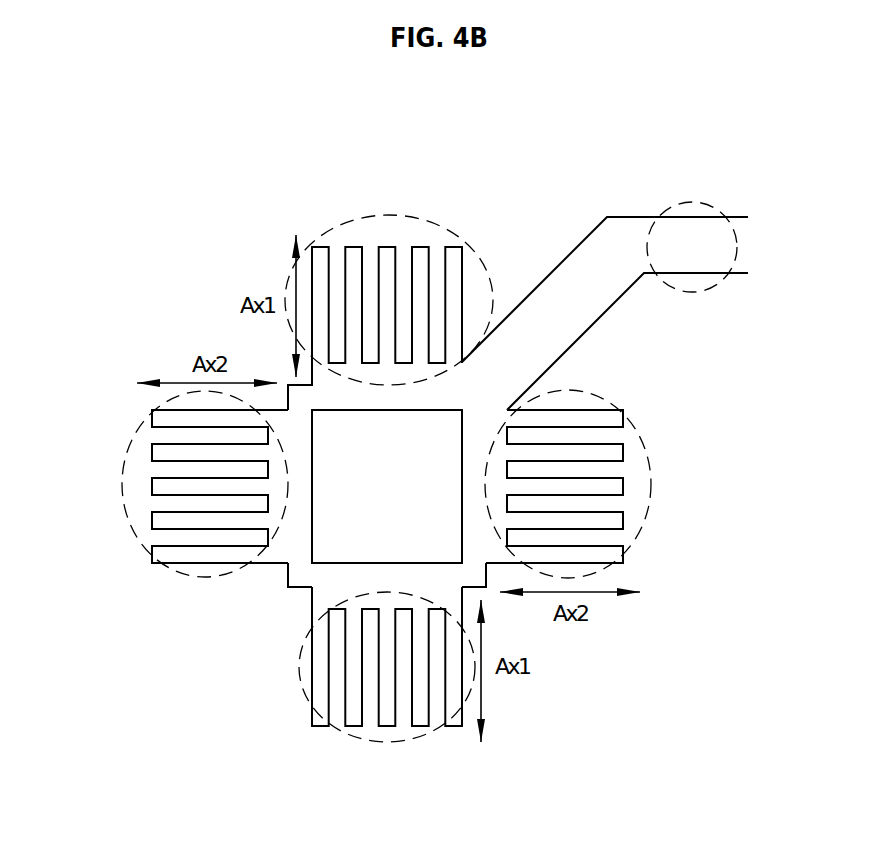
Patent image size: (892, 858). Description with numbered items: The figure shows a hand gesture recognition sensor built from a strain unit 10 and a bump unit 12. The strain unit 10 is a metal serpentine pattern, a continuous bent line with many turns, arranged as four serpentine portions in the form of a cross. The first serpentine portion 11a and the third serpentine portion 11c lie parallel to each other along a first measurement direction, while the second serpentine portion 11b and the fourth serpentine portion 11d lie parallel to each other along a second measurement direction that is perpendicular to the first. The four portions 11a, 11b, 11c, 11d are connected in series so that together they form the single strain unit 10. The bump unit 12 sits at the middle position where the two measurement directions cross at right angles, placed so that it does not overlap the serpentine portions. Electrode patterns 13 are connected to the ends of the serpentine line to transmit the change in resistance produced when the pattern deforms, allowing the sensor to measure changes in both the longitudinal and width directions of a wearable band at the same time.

The strain unit 10 is at (531, 218).
The first serpentine portion 11a is at (417, 218).
The second serpentine portion 11b is at (633, 430).
The third serpentine portion 11c is at (385, 742).
The fourth serpentine portion 11d is at (176, 572).
The bump unit 12 is at (352, 537).
The electrode pattern 13 is at (692, 203).